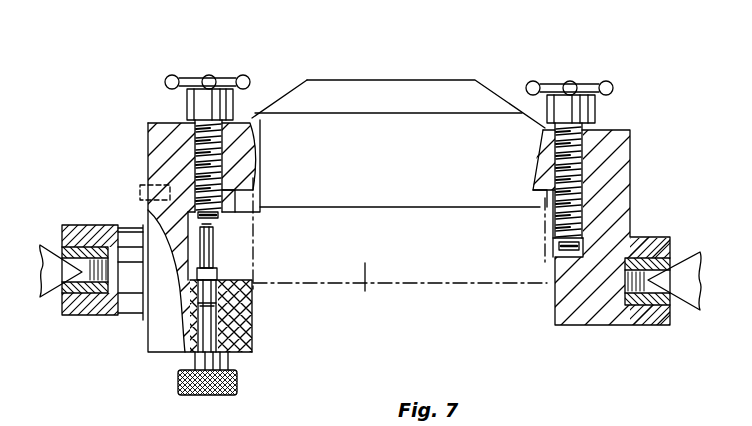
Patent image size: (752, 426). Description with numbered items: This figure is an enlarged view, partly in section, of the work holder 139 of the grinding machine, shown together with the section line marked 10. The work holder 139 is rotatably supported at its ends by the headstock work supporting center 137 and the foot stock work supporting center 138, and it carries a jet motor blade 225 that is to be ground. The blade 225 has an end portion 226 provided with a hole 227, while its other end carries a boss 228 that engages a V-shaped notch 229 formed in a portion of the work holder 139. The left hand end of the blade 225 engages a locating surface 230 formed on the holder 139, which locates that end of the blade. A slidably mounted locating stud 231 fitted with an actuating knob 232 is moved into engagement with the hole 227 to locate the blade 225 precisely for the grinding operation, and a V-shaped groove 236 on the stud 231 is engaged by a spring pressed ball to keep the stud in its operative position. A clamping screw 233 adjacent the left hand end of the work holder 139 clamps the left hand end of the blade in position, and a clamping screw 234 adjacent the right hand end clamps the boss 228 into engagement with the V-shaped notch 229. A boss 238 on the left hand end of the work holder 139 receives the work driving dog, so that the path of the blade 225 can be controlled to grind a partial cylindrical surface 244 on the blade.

The section line 10 is at (232, 28).
The work supporting center 137 is at (85, 265).
The work supporting center 138 is at (694, 252).
The work holder 139 is at (344, 81).
The jet motor blade 225 is at (366, 270).
The end portion 226 is at (148, 210).
The hole 227 is at (216, 221).
The boss 228 is at (568, 255).
The V-shaped notch 229 is at (578, 258).
The locating surface 230 is at (253, 284).
The locating stud 231 is at (208, 305).
The actuating knob 232 is at (238, 383).
The clamping screw 233 is at (240, 86).
The clamping screw 234 is at (600, 126).
The V-shaped groove 236 is at (190, 353).
The boss 238 is at (133, 288).
The partial cylindrical surface 244 is at (466, 283).